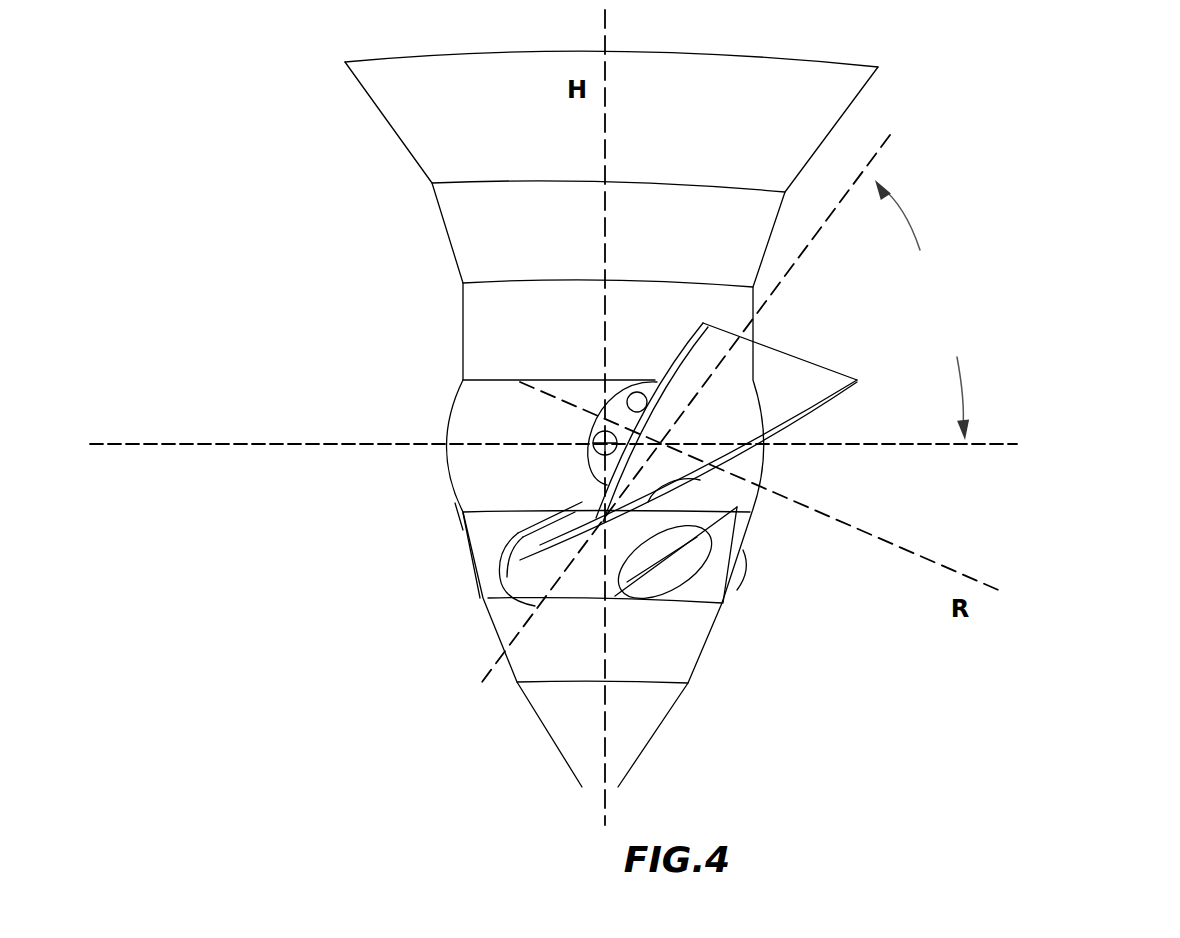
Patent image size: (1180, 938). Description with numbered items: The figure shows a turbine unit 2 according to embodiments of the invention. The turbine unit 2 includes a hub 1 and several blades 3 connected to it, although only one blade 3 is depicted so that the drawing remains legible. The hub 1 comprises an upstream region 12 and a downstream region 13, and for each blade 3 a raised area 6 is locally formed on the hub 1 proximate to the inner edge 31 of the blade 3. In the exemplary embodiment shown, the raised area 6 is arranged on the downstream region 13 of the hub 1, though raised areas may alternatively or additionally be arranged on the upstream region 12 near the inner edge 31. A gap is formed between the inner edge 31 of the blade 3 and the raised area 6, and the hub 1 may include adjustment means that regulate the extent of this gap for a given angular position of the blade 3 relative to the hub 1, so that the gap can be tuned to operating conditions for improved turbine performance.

The hub 1 is at (485, 322).
The turbine unit 2 is at (983, 172).
The blade 3 is at (762, 400).
The raised area 6 is at (488, 561).
The upstream region 12 is at (689, 268).
The downstream region 13 is at (557, 660).
The inner edge 31 is at (672, 336).